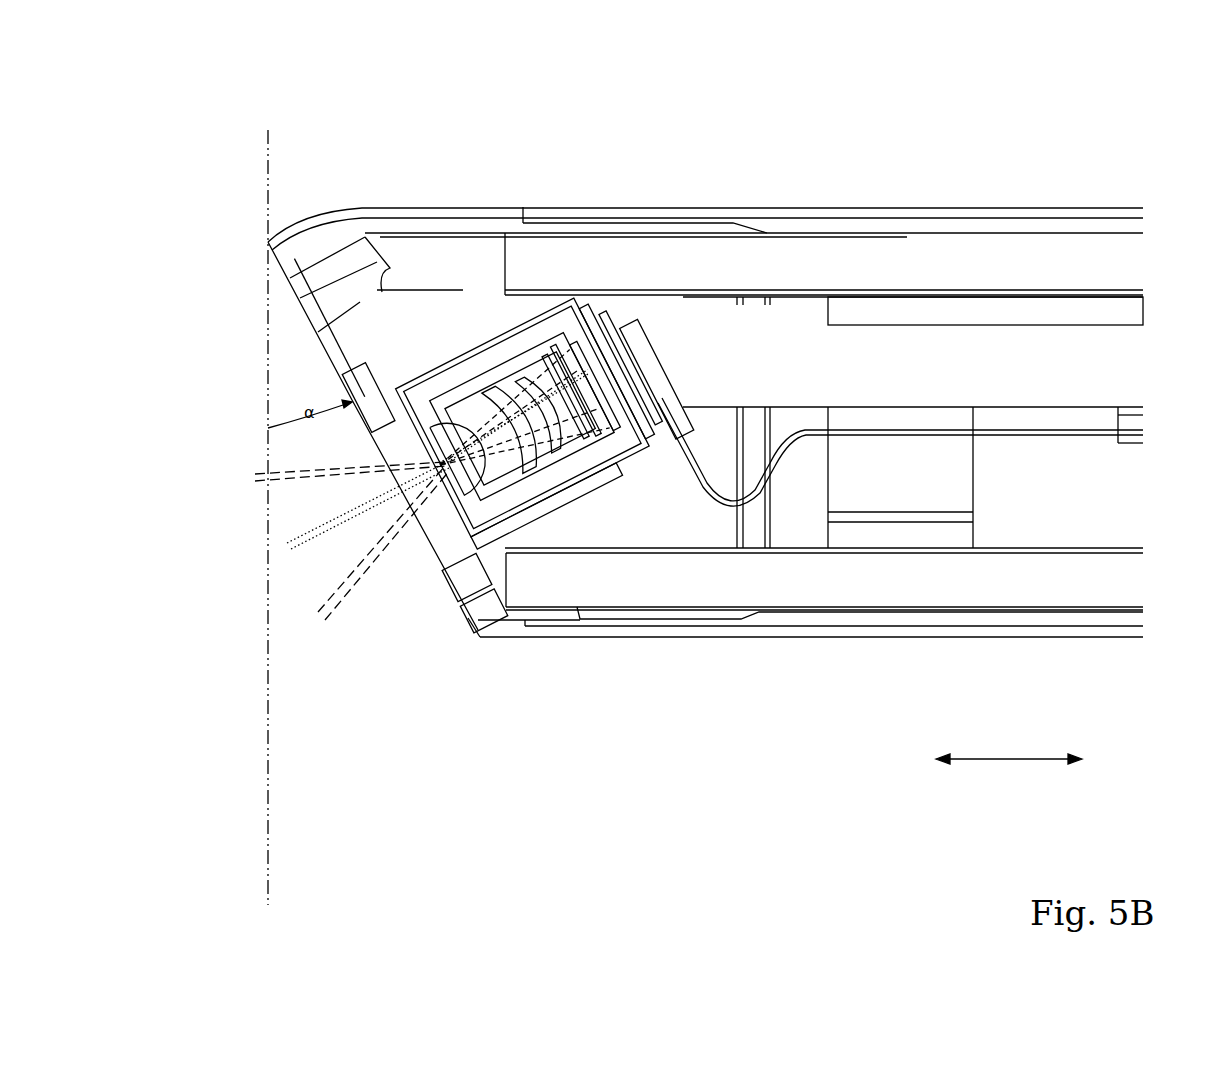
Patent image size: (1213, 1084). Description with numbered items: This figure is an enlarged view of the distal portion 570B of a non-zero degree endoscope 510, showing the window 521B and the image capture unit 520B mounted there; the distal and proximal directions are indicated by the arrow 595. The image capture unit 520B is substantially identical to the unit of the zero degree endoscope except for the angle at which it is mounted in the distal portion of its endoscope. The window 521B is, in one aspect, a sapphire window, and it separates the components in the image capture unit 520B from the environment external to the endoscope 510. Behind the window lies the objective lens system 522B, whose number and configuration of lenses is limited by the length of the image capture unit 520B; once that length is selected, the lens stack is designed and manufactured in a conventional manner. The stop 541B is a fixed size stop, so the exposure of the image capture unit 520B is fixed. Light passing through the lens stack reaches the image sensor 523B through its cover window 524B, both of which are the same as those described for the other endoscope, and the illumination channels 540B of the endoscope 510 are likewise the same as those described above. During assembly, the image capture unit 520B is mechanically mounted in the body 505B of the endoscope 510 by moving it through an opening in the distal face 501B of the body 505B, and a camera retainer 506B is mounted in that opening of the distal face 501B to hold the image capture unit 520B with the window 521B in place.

The distal face 501B is at (325, 353).
The body 505B is at (450, 332).
The camera retainer 506B is at (375, 420).
The non-zero degree endoscope 510 is at (901, 124).
The image capture unit 520B is at (544, 455).
The window 521B is at (515, 426).
The objective lens system 522B is at (521, 419).
The image sensor 523B is at (595, 385).
The cover window 524B is at (570, 392).
The illumination channels 540B is at (1029, 587).
The stop 541B is at (464, 452).
The distal portion 570B is at (825, 845).
The arrow 595 is at (1019, 794).